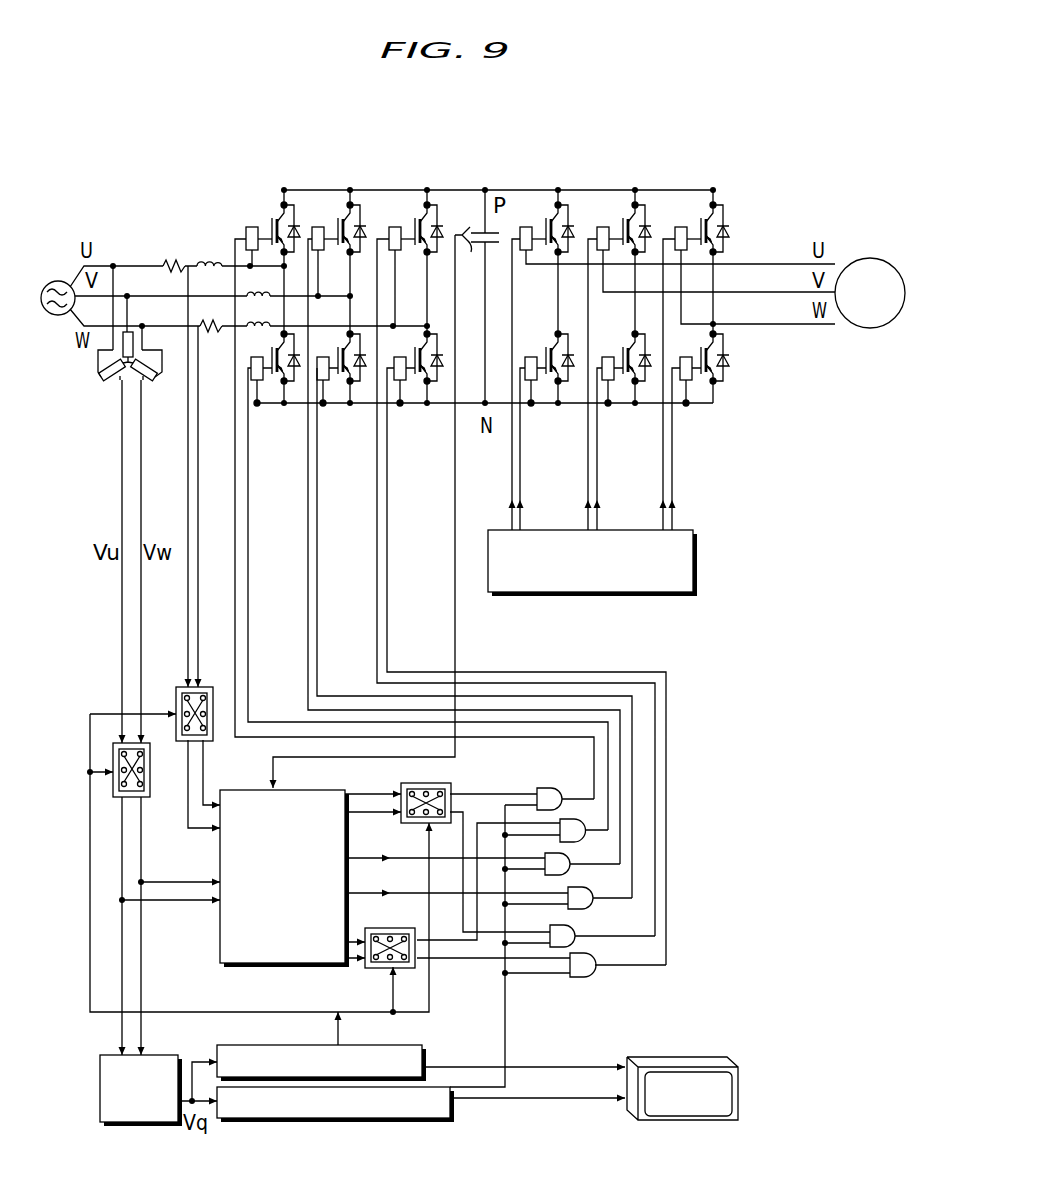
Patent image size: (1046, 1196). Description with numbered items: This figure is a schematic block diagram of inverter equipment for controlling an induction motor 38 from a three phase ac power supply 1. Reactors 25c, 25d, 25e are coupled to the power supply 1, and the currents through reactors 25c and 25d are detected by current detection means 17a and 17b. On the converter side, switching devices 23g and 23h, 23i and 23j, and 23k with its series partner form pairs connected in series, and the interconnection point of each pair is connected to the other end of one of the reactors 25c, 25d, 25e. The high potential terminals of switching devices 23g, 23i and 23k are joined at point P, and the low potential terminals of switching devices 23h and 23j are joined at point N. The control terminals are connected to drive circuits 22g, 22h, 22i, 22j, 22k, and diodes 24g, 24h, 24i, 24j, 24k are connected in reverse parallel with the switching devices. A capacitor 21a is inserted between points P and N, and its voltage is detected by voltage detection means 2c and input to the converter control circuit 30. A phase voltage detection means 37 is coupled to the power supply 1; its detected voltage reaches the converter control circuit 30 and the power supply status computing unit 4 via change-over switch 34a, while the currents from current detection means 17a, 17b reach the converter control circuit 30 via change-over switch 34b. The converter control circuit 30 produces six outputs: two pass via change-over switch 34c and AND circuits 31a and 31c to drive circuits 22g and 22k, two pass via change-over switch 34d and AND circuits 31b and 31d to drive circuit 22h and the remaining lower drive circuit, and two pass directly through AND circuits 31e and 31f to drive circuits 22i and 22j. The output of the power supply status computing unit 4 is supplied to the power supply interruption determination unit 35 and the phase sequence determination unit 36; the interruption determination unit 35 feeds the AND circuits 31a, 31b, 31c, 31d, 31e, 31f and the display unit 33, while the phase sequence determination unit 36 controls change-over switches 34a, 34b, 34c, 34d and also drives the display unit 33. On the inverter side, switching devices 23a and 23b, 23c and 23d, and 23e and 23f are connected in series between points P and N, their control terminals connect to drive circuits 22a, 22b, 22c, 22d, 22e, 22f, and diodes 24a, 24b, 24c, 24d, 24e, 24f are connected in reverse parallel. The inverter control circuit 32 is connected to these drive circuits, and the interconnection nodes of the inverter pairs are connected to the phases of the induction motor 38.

The three phase ac power supply 1 is at (58, 316).
The voltage detection means 2c is at (464, 247).
The power supply status computing unit 4 is at (143, 1124).
The current detection means 17a is at (168, 260).
The current detection means 17b is at (211, 333).
The capacitor 21a is at (472, 222).
The drive circuit 22a is at (524, 226).
The drive circuit 22b is at (533, 405).
The drive circuit 22c is at (602, 226).
The drive circuit 22d is at (611, 405).
The drive circuit 22e is at (680, 226).
The drive circuit 22f is at (687, 405).
The drive circuit 22g is at (248, 226).
The drive circuit 22h is at (258, 405).
The drive circuit 22i is at (320, 216).
The drive circuit 22j is at (324, 405).
The drive circuit 22k is at (388, 224).
The switching device 23a is at (552, 211).
The switching device 23b is at (551, 397).
The switching device 23c is at (634, 211).
The switching device 23d is at (628, 397).
The switching device 23e is at (712, 211).
The switching device 23f is at (705, 397).
The switching device 23g is at (276, 212).
The switching device 23h is at (278, 396).
The switching device 23i is at (340, 211).
The switching device 23j is at (342, 396).
The switching device 23k is at (416, 211).
The diode 24a is at (570, 211).
The diode 24b is at (568, 405).
The diode 24c is at (648, 211).
The diode 24d is at (645, 405).
The diode 24e is at (727, 211).
The diode 24f is at (723, 386).
The diode 24g is at (293, 204).
The diode 24h is at (301, 405).
The diode 24i is at (360, 199).
The diode 24j is at (362, 405).
The diode 24k is at (440, 211).
The reactor 25c is at (205, 260).
The reactor 25d is at (247, 333).
The reactor 25e is at (246, 290).
The converter control circuit 30 is at (221, 962).
The AND circuit 31a is at (540, 787).
The AND circuit 31b is at (580, 818).
The AND circuit 31c is at (557, 948).
The AND circuit 31d is at (598, 978).
The AND circuit 31e is at (597, 857).
The AND circuit 31f is at (612, 892).
The inverter control circuit 32 is at (603, 593).
The display unit 33 is at (740, 1083).
The change-over switch 34a is at (114, 797).
The change-over switch 34b is at (176, 700).
The change-over switch 34c is at (458, 783).
The change-over switch 34d is at (375, 968).
The power supply interruption determination unit 35 is at (318, 1117).
The phase sequence determination unit 36 is at (260, 1044).
The phase voltage detection means 37 is at (98, 362).
The induction motor 38 is at (890, 327).